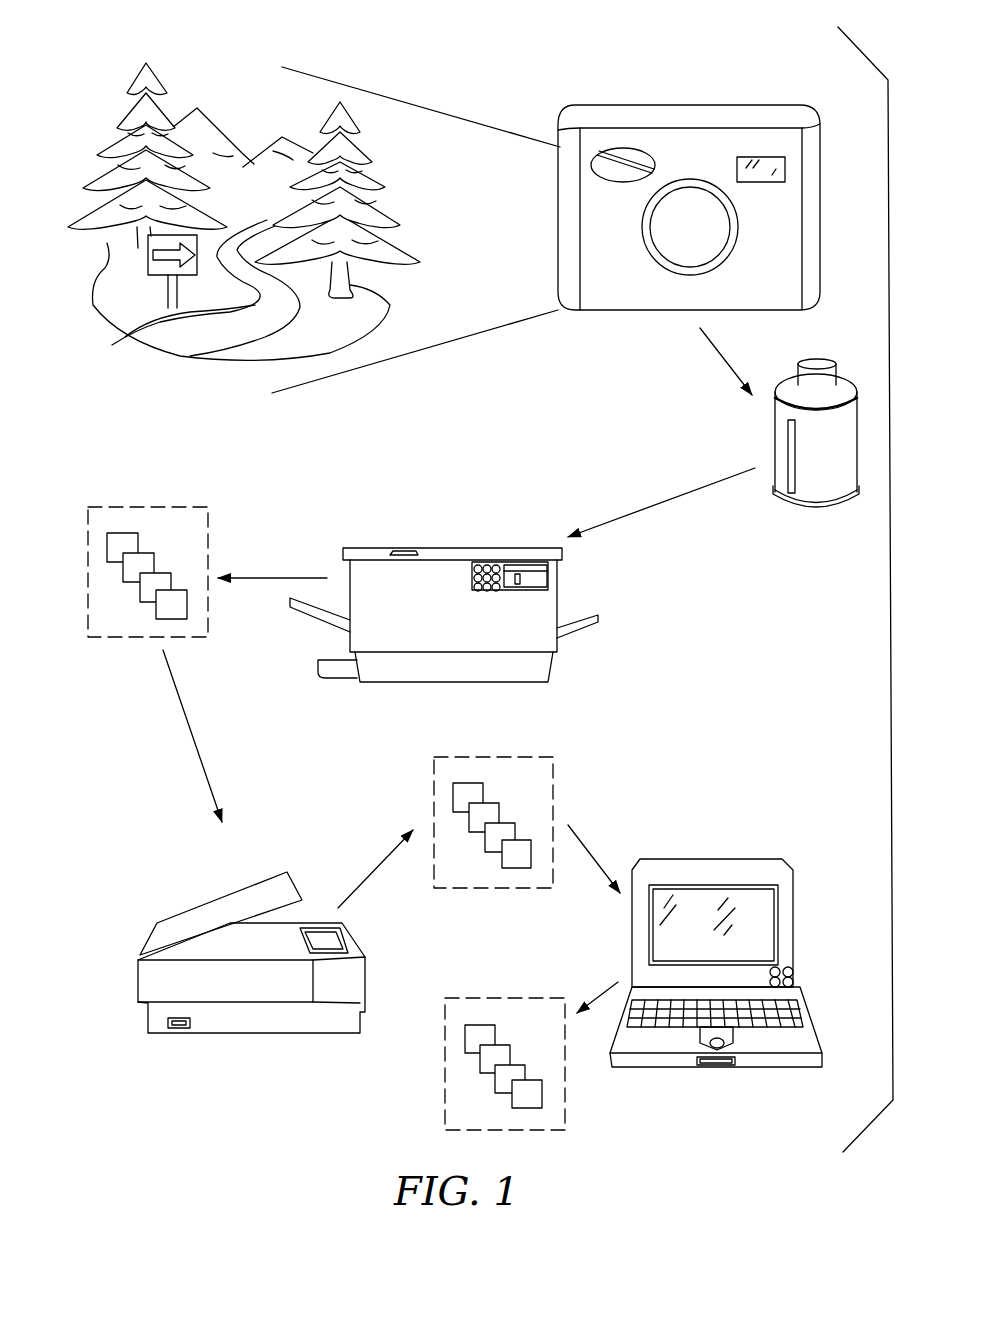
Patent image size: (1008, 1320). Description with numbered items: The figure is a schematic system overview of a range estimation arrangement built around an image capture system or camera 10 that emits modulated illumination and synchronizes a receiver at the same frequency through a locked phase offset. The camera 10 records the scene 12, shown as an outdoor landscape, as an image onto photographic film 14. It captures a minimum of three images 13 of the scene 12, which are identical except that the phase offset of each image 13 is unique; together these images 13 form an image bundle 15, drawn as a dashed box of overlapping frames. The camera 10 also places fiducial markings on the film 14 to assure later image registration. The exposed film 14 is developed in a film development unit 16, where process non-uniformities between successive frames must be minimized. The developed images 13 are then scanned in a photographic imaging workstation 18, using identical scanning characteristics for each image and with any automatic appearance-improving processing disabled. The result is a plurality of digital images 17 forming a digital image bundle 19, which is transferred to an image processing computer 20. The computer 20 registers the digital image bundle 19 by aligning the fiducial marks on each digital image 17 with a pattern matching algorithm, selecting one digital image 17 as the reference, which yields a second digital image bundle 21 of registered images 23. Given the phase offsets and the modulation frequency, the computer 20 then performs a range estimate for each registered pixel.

The image capture system or camera 10 is at (662, 118).
The scene 12 is at (405, 193).
The images 13 is at (148, 566).
The photographic film 14 is at (812, 487).
The image bundle 15 is at (160, 507).
The film development unit 16 is at (446, 548).
The digital images 17 is at (488, 810).
The photographic imaging workstation (PIW) 18 is at (205, 910).
The digital image bundle 19 is at (506, 757).
The image processing computer 20 is at (740, 859).
The second digital image bundle 21 is at (445, 1053).
The registered images 23 is at (529, 1085).